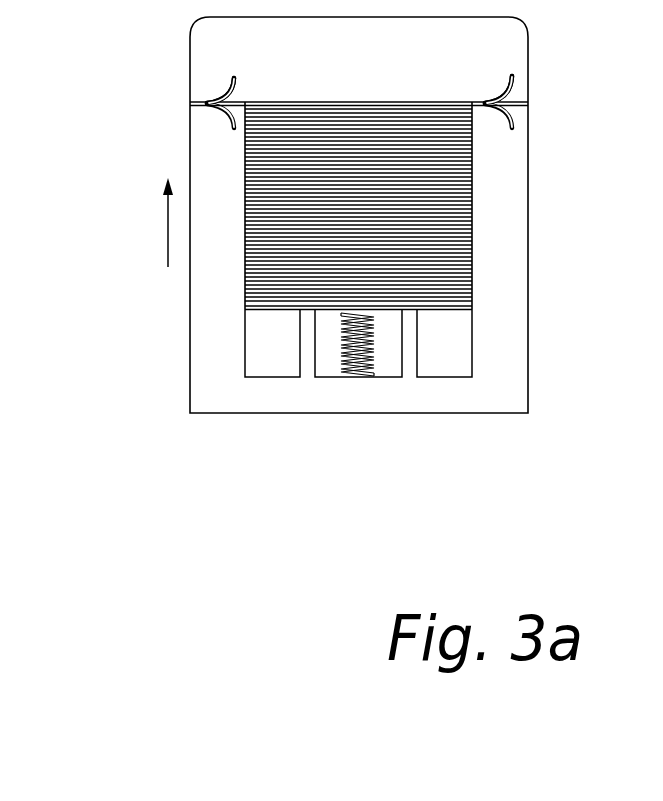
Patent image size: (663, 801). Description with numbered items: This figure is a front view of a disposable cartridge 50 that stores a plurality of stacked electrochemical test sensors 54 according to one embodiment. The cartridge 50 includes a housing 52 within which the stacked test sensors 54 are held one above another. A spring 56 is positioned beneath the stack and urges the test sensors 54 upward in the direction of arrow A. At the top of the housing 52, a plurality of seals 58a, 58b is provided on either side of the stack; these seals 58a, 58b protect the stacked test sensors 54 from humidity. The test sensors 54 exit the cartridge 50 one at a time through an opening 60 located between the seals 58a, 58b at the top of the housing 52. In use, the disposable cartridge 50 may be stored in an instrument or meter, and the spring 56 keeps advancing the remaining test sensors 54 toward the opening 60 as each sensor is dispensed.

The disposable cartridge 50 is at (100, 249).
The housing 52 is at (528, 196).
The stacked electrochemical test sensors 54 is at (448, 287).
The spring 56 is at (351, 369).
The seal 58a is at (229, 93).
The seal 58b is at (515, 78).
The opening 60 is at (205, 104).